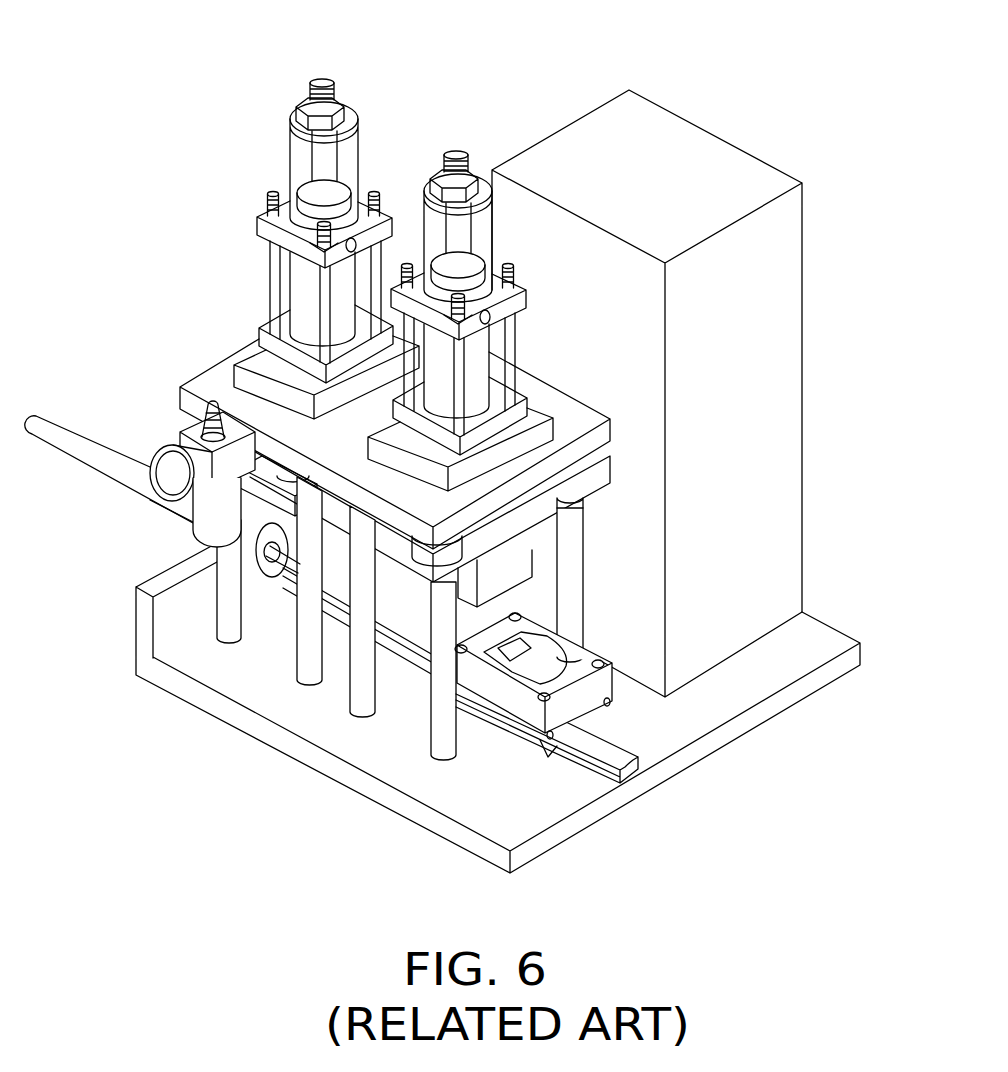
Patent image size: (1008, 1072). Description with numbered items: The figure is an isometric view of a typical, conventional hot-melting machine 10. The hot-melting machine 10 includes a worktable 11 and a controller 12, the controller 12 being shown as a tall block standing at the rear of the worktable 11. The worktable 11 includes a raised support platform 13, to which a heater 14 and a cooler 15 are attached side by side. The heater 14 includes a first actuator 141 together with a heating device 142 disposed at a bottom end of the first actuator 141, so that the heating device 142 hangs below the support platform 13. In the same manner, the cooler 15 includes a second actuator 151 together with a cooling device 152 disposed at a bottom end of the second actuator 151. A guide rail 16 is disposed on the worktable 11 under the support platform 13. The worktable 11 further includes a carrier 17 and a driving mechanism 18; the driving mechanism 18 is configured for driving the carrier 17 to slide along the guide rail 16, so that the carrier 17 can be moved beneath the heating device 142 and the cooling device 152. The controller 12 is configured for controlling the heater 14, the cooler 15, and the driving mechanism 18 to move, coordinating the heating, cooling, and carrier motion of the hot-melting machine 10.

The hot-melting machine 10 is at (499, 43).
The worktable 11 is at (328, 727).
The controller 12 is at (778, 287).
The support platform 13 is at (535, 474).
The heater 14 is at (629, 314).
The first actuator 141 is at (480, 382).
The heating device 142 is at (527, 577).
The cooler 15 is at (304, 249).
The second actuator 151 is at (300, 296).
The cooling device 152 is at (234, 527).
The guide rail 16 is at (630, 774).
The carrier 17 is at (603, 685).
The driving mechanism 18 is at (66, 430).